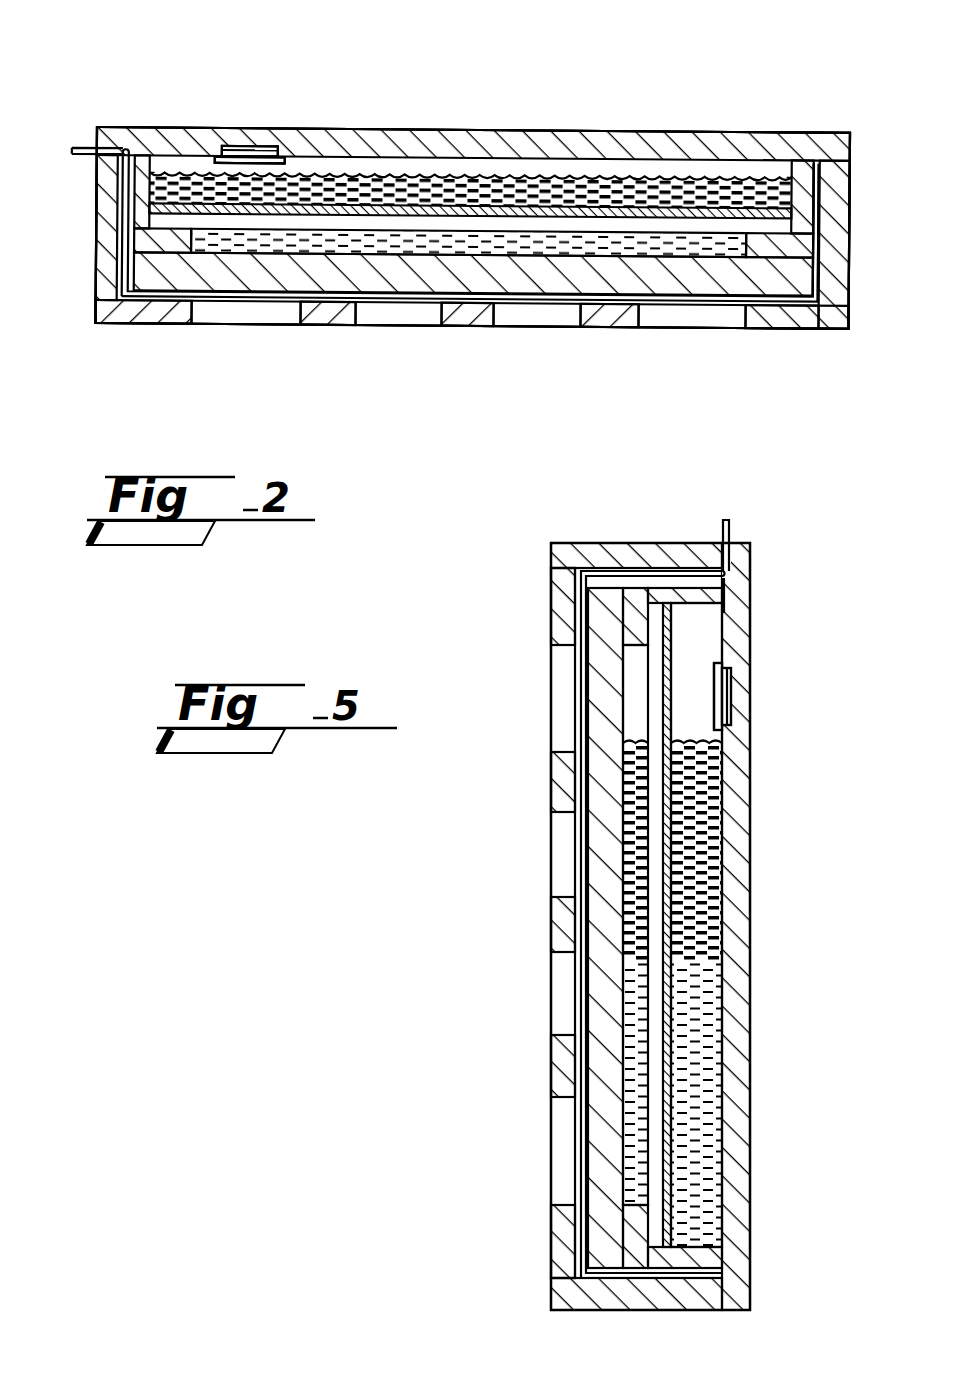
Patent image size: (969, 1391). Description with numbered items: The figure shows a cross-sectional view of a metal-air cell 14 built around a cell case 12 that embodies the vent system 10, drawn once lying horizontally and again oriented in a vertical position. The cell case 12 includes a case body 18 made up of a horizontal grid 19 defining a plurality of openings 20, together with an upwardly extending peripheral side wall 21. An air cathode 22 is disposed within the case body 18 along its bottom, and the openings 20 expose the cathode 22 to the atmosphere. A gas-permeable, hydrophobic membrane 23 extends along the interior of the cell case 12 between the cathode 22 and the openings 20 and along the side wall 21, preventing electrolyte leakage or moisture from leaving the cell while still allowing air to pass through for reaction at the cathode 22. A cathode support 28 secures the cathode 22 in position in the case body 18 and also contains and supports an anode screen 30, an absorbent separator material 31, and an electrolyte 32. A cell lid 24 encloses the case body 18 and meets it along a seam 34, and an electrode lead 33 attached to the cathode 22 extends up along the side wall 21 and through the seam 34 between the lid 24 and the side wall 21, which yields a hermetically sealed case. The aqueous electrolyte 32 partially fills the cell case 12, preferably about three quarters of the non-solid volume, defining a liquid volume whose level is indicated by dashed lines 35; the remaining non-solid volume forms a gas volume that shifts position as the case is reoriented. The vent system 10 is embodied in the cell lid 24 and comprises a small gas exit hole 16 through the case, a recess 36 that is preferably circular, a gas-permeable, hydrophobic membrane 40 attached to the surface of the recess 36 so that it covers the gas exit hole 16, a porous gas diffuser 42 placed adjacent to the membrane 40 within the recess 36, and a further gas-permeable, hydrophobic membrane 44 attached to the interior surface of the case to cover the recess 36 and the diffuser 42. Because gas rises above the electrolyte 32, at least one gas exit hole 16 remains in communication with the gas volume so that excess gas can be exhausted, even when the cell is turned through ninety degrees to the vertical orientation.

In FIG. 2, the vent system 10 is at (272, 96).
In FIG. 2, the cell case 12 is at (860, 252).
In FIG. 5, the cell case 12 is at (611, 522).
In FIG. 2, the metal-air cell 14 is at (778, 80).
In FIG. 5, the metal-air cell 14 is at (408, 894).
In FIG. 2, the gas exit hole 16 is at (243, 152).
In FIG. 5, the gas exit hole 16 is at (733, 683).
In FIG. 2, the case body 18 is at (110, 305).
In FIG. 5, the case body 18 is at (560, 545).
In FIG. 2, the horizontal grid 19 is at (140, 318).
In FIG. 5, the horizontal grid 19 is at (558, 605).
In FIG. 2, the openings 20 is at (248, 320).
In FIG. 5, the openings 20 is at (565, 695).
In FIG. 2, the peripheral side wall 21 is at (122, 226).
In FIG. 5, the peripheral side wall 21 is at (632, 590).
In FIG. 2, the air cathode 22 is at (818, 292).
In FIG. 5, the air cathode 22 is at (608, 1248).
In FIG. 2, the gas-permeable hydrophobic membrane 23 is at (735, 300).
In FIG. 5, the gas-permeable hydrophobic membrane 23 is at (583, 1192).
In FIG. 2, the cell lid 24 is at (578, 129).
In FIG. 5, the cell lid 24 is at (740, 1010).
In FIG. 2, the cathode support 28 is at (816, 192).
In FIG. 5, the cathode support 28 is at (697, 1290).
In FIG. 2, the anode screen 30 is at (705, 165).
In FIG. 5, the anode screen 30 is at (668, 955).
In FIG. 2, the absorbent separator material 31 is at (152, 214).
In FIG. 5, the absorbent separator material 31 is at (667, 600).
In FIG. 2, the electrolyte 32 is at (458, 180).
In FIG. 5, the electrolyte 32 is at (705, 1078).
In FIG. 2, the electrode lead 33 is at (76, 148).
In FIG. 5, the electrode lead 33 is at (722, 520).
In FIG. 2, the seam 34 is at (90, 148).
In FIG. 5, the seam 34 is at (730, 545).
In FIG. 2, the dashed lines 35 is at (630, 170).
In FIG. 2, the recess 36 is at (290, 156).
In FIG. 5, the recess 36 is at (722, 745).
In FIG. 2, the gas-permeable hydrophobic membrane 40 is at (222, 147).
In FIG. 5, the gas-permeable hydrophobic membrane 40 is at (727, 690).
In FIG. 2, the porous gas diffuser 42 is at (216, 149).
In FIG. 5, the porous gas diffuser 42 is at (727, 665).
In FIG. 2, the gas-permeable hydrophobic membrane 44 is at (288, 162).
In FIG. 5, the gas-permeable hydrophobic membrane 44 is at (697, 748).